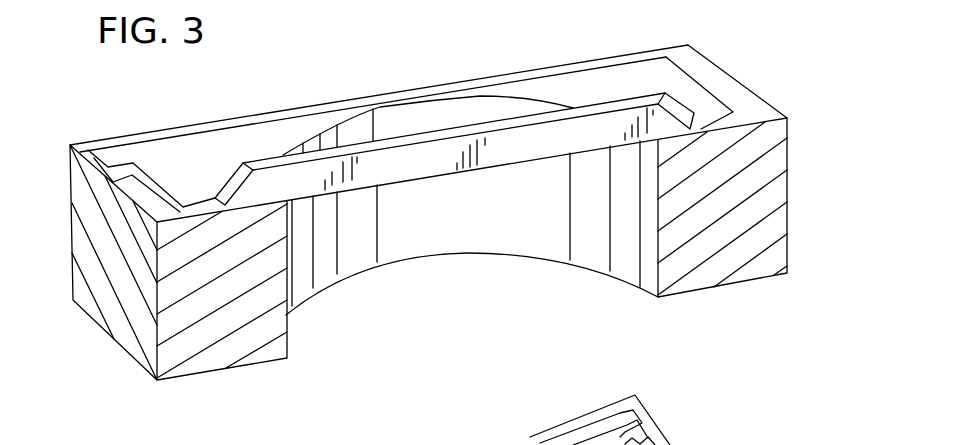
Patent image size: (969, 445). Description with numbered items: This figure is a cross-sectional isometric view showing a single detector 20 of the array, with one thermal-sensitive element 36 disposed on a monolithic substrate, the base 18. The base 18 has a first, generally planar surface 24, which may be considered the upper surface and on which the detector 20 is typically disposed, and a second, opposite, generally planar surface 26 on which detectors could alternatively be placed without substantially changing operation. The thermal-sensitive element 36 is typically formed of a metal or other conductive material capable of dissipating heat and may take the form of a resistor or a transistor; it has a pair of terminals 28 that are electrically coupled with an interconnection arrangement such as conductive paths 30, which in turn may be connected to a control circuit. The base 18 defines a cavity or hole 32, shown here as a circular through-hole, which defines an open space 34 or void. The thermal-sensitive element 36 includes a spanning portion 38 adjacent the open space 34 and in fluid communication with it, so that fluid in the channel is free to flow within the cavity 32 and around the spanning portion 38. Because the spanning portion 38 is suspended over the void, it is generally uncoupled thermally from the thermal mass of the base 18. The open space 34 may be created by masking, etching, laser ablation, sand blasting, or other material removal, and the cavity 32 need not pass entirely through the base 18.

The base 18 is at (72, 202).
The detector 20 is at (454, 118).
The first generally planar surface 24 is at (172, 165).
The second generally planar surface 26 is at (213, 375).
The terminals 28 is at (230, 192).
The conductive paths 30 is at (108, 166).
The cavity 32 is at (632, 260).
The open space 34 is at (495, 267).
The thermal-sensitive element 36 is at (643, 98).
The spanning portion 38 is at (505, 147).